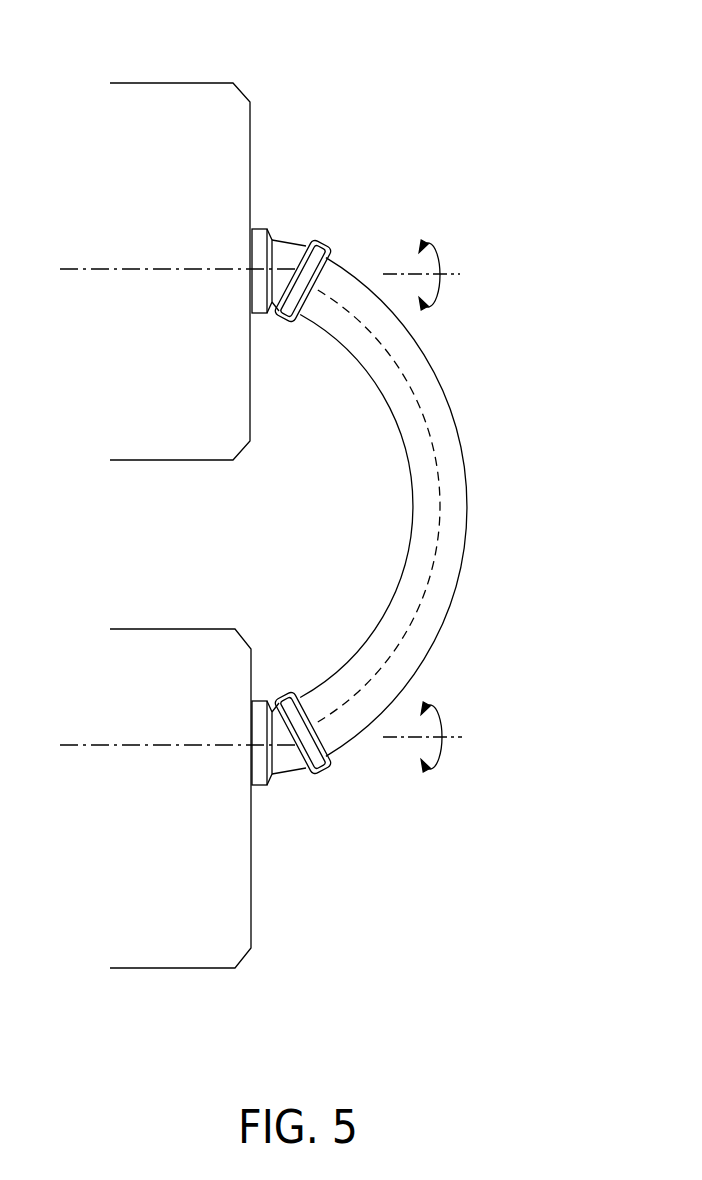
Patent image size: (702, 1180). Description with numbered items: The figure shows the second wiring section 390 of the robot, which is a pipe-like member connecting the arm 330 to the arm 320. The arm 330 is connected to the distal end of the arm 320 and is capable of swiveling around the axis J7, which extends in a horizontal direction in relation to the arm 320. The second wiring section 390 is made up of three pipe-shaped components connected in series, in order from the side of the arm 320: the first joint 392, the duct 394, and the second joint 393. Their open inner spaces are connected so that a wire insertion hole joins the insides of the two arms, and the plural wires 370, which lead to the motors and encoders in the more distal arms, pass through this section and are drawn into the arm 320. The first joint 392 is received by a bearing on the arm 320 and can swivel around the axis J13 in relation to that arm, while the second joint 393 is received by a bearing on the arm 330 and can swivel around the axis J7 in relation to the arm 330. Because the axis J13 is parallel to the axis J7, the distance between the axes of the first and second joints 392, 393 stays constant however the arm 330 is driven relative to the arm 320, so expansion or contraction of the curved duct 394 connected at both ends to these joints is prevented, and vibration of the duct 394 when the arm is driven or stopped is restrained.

The arm 320 is at (163, 937).
The arm 330 is at (144, 98).
The wires 370 is at (433, 562).
The second wiring section 390 is at (412, 512).
The first joint 392 is at (282, 763).
The second joint 393 is at (283, 250).
The duct 394 is at (453, 499).
The axis J7 is at (453, 274).
The axis J13 is at (453, 737).